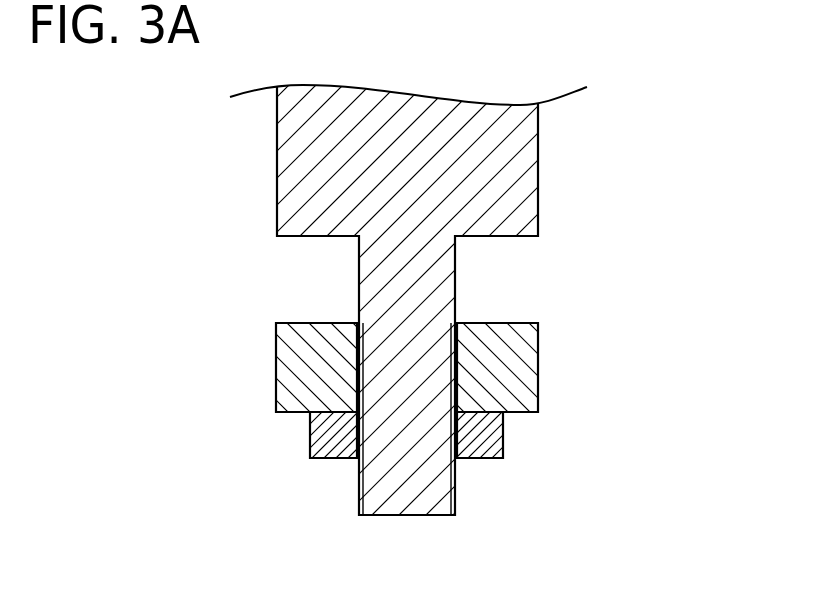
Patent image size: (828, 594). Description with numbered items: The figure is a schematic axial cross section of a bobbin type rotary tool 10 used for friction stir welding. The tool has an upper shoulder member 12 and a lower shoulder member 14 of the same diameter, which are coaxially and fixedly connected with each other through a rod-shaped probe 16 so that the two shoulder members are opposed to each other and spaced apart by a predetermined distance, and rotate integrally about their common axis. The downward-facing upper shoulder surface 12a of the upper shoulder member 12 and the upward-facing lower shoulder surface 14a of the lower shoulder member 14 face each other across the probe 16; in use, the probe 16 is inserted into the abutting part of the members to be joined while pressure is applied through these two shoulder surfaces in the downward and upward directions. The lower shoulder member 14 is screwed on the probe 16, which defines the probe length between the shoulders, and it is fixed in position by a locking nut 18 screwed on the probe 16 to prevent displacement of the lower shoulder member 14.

The rotary tool 10 is at (226, 162).
The upper shoulder member 12 is at (523, 159).
The upper shoulder surface 12a is at (505, 237).
The lower shoulder member 14 is at (295, 372).
The lower shoulder surface 14a is at (507, 323).
The probe 16 is at (407, 495).
The locking nut 18 is at (497, 437).